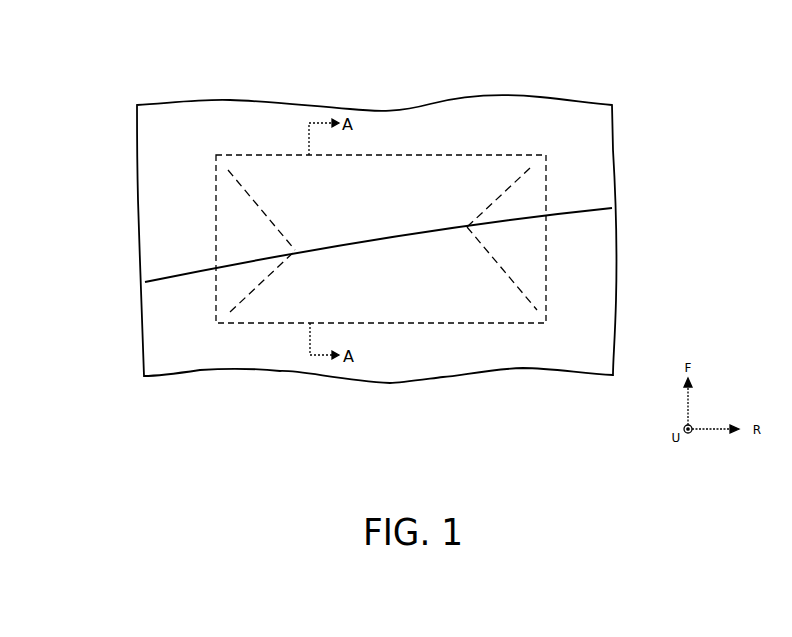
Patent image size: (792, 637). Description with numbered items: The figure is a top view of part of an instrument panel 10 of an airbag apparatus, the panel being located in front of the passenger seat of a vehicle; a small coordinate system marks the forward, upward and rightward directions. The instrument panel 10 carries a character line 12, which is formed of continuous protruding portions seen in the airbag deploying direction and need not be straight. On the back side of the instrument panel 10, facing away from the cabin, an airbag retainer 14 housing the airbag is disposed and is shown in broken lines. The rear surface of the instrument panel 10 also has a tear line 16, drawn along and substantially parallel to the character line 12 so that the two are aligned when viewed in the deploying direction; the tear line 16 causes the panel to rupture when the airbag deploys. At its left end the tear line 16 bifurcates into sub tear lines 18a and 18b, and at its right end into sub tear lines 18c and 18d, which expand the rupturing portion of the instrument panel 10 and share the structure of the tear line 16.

The instrument panel 10 is at (618, 137).
The character line 12 is at (598, 210).
The airbag retainer 14 is at (404, 156).
The tear line 16 is at (440, 232).
The sub tear line 18a is at (246, 186).
The sub tear line 18b is at (248, 291).
The sub tear line 18c is at (512, 187).
The sub tear line 18d is at (515, 284).